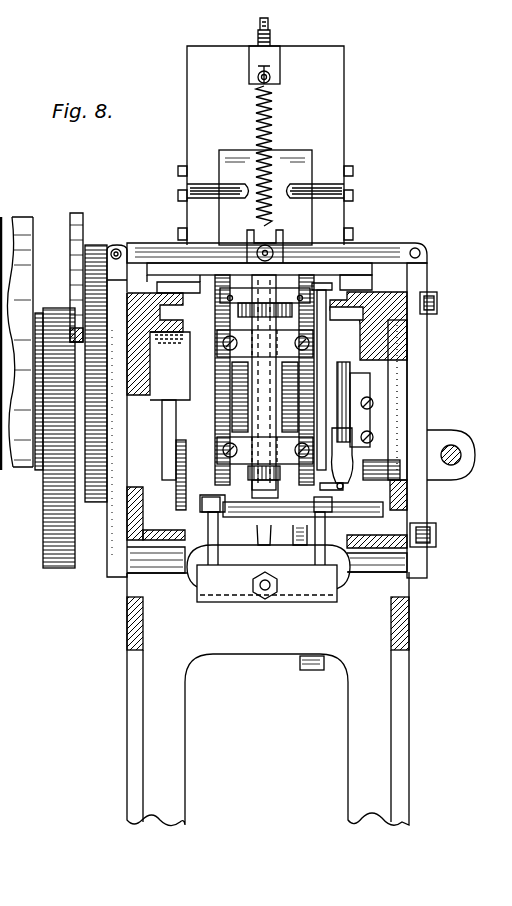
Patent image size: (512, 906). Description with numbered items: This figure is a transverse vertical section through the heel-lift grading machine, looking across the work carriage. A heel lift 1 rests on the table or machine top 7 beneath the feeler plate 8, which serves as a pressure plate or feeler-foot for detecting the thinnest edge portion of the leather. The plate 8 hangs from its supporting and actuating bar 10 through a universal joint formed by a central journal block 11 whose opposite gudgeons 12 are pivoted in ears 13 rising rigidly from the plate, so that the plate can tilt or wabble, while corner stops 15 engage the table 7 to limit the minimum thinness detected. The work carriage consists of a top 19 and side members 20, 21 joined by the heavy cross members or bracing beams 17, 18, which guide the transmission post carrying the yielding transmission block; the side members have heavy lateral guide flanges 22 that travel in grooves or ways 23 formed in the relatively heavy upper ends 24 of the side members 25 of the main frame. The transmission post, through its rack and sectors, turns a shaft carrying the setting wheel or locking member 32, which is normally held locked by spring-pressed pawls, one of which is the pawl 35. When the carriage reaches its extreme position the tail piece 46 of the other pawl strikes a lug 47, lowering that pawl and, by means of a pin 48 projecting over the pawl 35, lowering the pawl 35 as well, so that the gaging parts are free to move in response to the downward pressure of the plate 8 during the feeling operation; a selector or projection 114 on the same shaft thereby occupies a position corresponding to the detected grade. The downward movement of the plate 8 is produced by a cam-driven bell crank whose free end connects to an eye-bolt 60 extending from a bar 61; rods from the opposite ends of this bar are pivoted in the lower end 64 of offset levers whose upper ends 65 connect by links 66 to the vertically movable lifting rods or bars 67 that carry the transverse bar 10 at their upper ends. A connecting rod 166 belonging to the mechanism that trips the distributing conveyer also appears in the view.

The heel lift 1 is at (262, 276).
The table 7 is at (137, 277).
The plate 8 is at (270, 292).
The supporting and actuating bar 10 is at (362, 292).
The central journal block 11 is at (254, 158).
The gudgeons 12 is at (246, 248).
The ears 13 is at (283, 246).
The corner stops 15 is at (200, 253).
The cross member 17 is at (265, 343).
The cross member 18 is at (265, 450).
The carriage top 19 is at (420, 252).
The side member 20 is at (206, 292).
The side member 21 is at (330, 266).
The lateral guide flanges 22 is at (352, 318).
The grooves 23 is at (430, 295).
The upper ends 24 is at (440, 305).
The side members 25 is at (127, 620).
The setting wheel 32 is at (163, 440).
The pawl 35 is at (133, 490).
The tail piece 46 is at (113, 552).
The lug 47 is at (267, 544).
The pin 48 is at (166, 473).
The eye-bolt 60 is at (265, 602).
The bar 61 is at (298, 590).
The lower end 64 is at (357, 604).
The upper ends 65 is at (147, 477).
The links 66 is at (133, 423).
The lifting rods 67 is at (417, 364).
The selector 114 is at (430, 417).
The connecting rod 166 is at (403, 547).